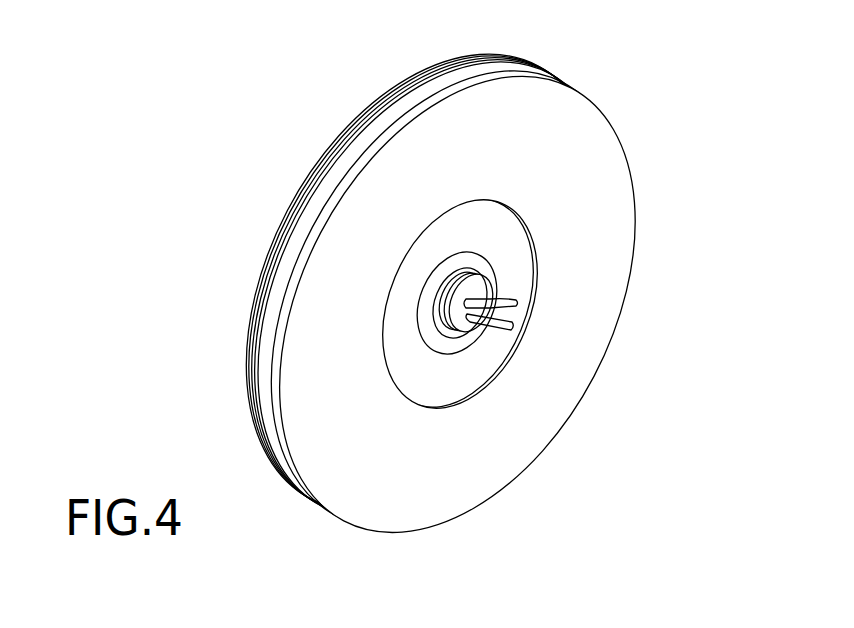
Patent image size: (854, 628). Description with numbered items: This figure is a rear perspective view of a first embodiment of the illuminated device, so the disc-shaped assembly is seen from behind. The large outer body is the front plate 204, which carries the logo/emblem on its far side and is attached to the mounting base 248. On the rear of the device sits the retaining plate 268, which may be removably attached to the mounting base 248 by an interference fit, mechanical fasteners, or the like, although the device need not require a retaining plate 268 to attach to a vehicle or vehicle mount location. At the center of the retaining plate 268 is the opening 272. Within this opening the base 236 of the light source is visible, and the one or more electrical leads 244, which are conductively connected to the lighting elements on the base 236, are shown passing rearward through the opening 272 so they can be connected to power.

The front plate 204 is at (322, 158).
The retaining plate 268 is at (605, 130).
The opening 272 is at (431, 410).
The mounting base 248 is at (472, 372).
The base 236 is at (478, 291).
The electrical leads 244 is at (515, 302).